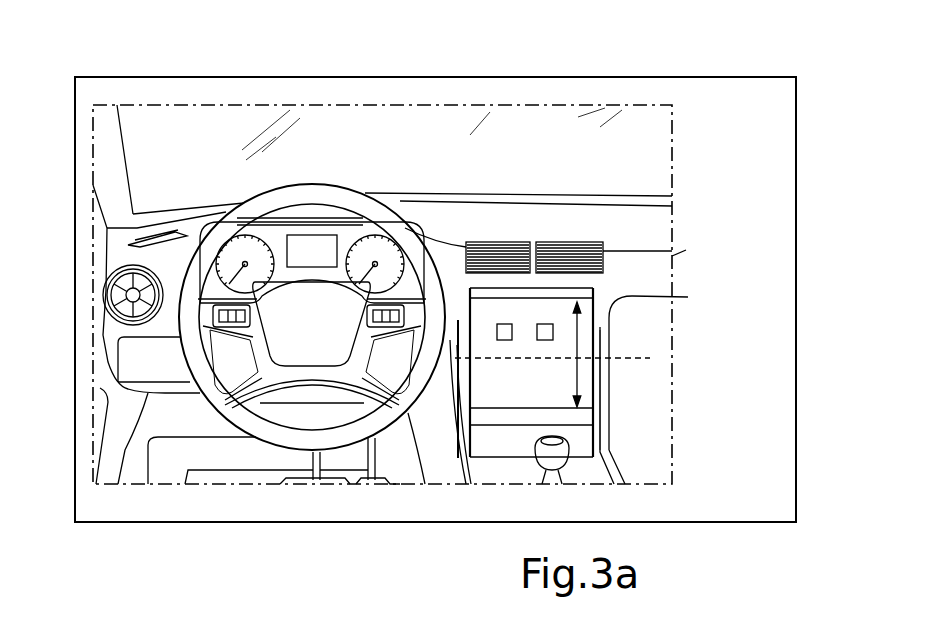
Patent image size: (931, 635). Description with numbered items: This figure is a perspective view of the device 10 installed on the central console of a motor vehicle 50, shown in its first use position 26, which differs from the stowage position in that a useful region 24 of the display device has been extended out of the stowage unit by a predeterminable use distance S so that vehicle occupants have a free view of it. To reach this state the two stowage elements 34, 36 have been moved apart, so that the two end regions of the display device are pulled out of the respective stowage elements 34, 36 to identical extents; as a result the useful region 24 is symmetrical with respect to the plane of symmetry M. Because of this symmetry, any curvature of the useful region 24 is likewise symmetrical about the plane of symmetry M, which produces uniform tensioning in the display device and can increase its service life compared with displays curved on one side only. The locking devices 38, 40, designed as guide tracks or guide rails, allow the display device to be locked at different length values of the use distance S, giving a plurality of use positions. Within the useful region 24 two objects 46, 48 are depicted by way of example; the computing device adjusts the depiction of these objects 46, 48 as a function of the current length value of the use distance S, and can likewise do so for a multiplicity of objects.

The motor vehicle 50 is at (189, 67).
The device 10 is at (693, 174).
The stowage element 34 is at (606, 285).
The useful region 24 is at (608, 323).
The first use position 26 is at (632, 373).
The stowage element 36 is at (604, 422).
The locking device 40 is at (605, 459).
The locking device 38 is at (459, 379).
The object 46 is at (502, 324).
The object 48 is at (547, 324).
The use distance S is at (576, 371).
The plane of symmetry M is at (634, 357).